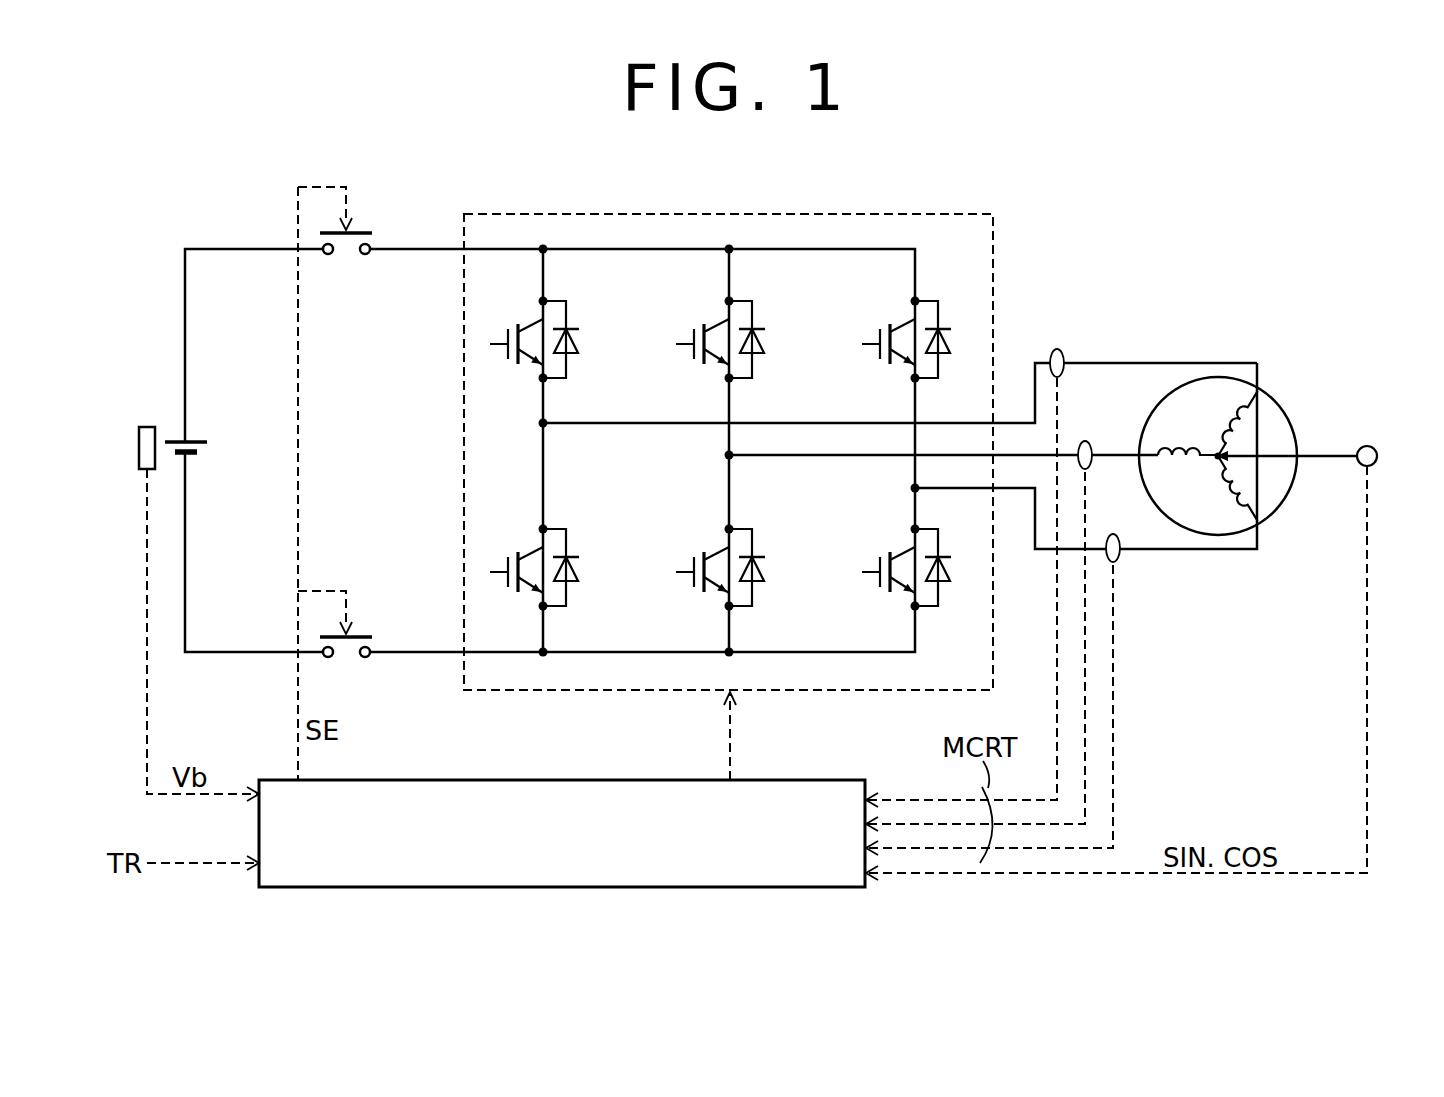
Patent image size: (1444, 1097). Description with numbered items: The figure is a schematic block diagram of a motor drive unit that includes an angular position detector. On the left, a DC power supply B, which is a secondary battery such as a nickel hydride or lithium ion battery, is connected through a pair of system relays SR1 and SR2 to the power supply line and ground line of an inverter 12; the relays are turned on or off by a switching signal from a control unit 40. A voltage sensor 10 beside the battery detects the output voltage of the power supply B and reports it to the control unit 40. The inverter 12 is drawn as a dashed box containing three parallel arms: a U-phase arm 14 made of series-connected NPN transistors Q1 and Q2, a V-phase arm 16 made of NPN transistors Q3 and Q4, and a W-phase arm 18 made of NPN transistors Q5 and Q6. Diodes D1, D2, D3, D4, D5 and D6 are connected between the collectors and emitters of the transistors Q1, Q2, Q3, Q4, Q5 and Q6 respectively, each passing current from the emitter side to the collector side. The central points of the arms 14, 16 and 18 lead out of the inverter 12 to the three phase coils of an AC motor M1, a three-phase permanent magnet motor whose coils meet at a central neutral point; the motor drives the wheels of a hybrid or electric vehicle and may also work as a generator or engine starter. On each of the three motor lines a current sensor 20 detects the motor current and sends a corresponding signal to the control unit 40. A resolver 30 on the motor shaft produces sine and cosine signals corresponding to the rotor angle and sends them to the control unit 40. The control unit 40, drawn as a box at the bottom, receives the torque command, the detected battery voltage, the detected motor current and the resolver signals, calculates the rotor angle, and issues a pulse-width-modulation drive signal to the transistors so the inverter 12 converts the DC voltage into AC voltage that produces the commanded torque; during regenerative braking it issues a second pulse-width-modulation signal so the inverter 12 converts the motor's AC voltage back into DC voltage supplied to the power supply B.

The voltage sensor 10 is at (146, 425).
The inverter 12 is at (728, 420).
The U-phase arm 14 is at (524, 438).
The V-phase arm 16 is at (709, 472).
The W-phase arm 18 is at (897, 502).
The current sensor 20 is at (1057, 349).
The resolver 30 is at (1375, 448).
The control unit 40 is at (799, 887).
The DC power supply B is at (195, 441).
The system relay SR1 is at (393, 218).
The system relay SR2 is at (360, 637).
The AC motor M1 is at (1276, 410).
The NPN transistor Q1 is at (526, 333).
The NPN transistor Q2 is at (526, 561).
The NPN transistor Q3 is at (712, 333).
The NPN transistor Q4 is at (712, 561).
The NPN transistor Q5 is at (898, 333).
The NPN transistor Q6 is at (899, 561).
The diode D1 is at (593, 310).
The diode D2 is at (593, 539).
The diode D3 is at (779, 310).
The diode D4 is at (779, 539).
The diode D5 is at (965, 310).
The diode D6 is at (965, 539).